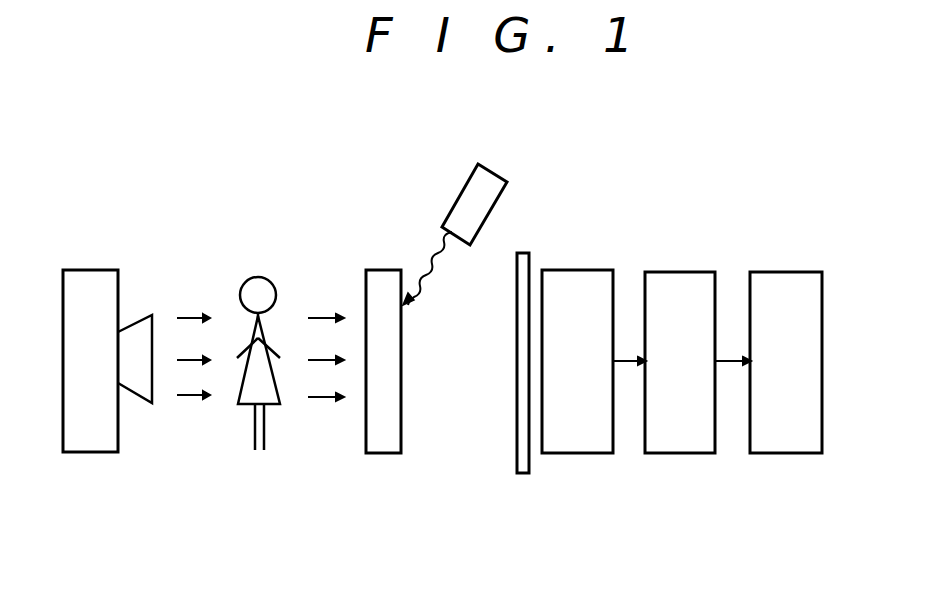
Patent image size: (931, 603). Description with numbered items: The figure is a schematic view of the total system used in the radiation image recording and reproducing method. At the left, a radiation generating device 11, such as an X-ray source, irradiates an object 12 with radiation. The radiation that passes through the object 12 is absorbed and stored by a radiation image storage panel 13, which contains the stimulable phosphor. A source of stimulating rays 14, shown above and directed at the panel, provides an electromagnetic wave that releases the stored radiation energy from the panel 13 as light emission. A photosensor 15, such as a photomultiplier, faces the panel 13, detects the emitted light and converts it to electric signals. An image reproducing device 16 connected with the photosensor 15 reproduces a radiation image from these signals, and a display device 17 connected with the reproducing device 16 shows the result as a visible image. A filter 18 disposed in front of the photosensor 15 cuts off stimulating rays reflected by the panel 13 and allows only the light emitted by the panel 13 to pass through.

The radiation generating device 11 is at (93, 440).
The object 12 is at (257, 432).
The radiation image storage panel 13 is at (385, 442).
The source of stimulating rays 14 is at (490, 183).
The photosensor 15 is at (580, 442).
The image reproducing device 16 is at (683, 440).
The display device 17 is at (792, 440).
The filter 18 is at (516, 452).